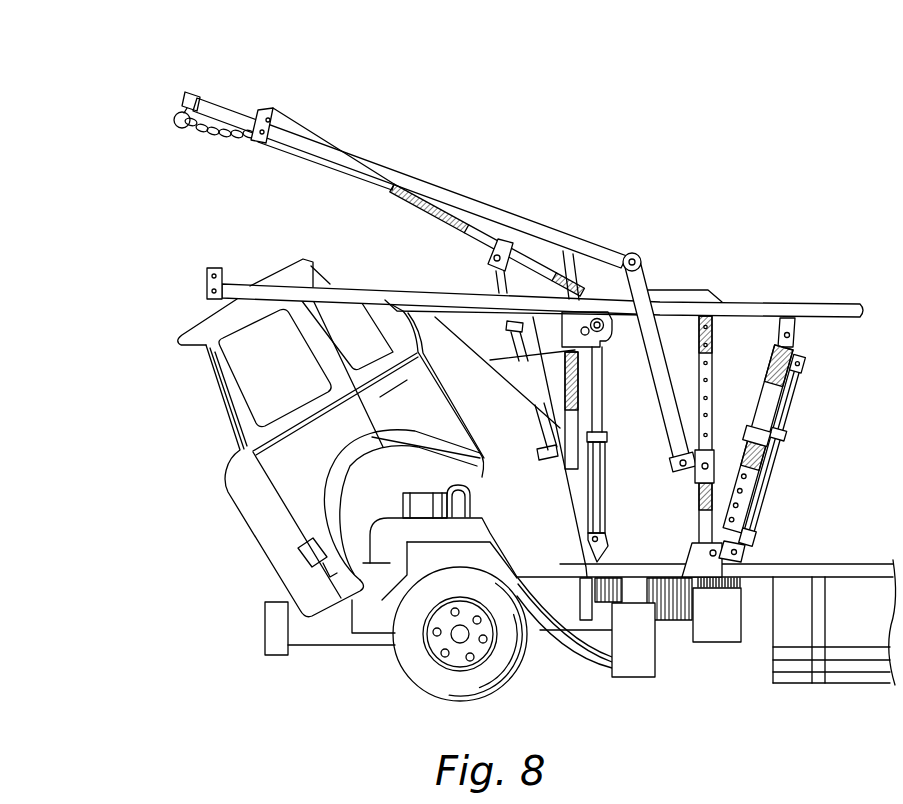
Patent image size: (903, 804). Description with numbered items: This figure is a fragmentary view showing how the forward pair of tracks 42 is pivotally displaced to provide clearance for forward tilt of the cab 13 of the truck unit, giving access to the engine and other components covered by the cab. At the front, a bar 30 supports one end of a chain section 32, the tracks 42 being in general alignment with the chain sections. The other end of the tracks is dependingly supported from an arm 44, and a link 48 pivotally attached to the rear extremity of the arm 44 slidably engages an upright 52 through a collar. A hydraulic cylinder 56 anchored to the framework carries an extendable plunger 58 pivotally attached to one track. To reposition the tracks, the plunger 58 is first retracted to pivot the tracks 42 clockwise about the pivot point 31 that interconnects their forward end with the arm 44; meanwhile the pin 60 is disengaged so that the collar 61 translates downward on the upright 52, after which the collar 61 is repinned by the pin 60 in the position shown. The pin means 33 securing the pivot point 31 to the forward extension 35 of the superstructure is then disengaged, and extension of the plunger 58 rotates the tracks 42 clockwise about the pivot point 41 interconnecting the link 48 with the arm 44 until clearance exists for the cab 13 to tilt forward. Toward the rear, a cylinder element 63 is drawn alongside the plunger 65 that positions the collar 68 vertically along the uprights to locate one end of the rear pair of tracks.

The cab 13 is at (264, 552).
The bar 30 is at (181, 129).
The pivot point 31 is at (275, 109).
The chain section 32 is at (215, 137).
The pin means 33 is at (216, 268).
The forward extension 35 is at (255, 283).
The pivot point 41 is at (634, 254).
The pair of tracks 42 is at (418, 207).
The arm 44 is at (522, 218).
The link 48 is at (650, 288).
The upright 52 is at (713, 362).
The hydraulic cylinder 56 is at (540, 422).
The plunger 58 is at (488, 262).
The pin 60 is at (710, 452).
The collar 61 is at (698, 484).
The hydraulic cylinder 63 is at (606, 515).
The plunger 65 is at (603, 418).
The collar 68 is at (600, 350).